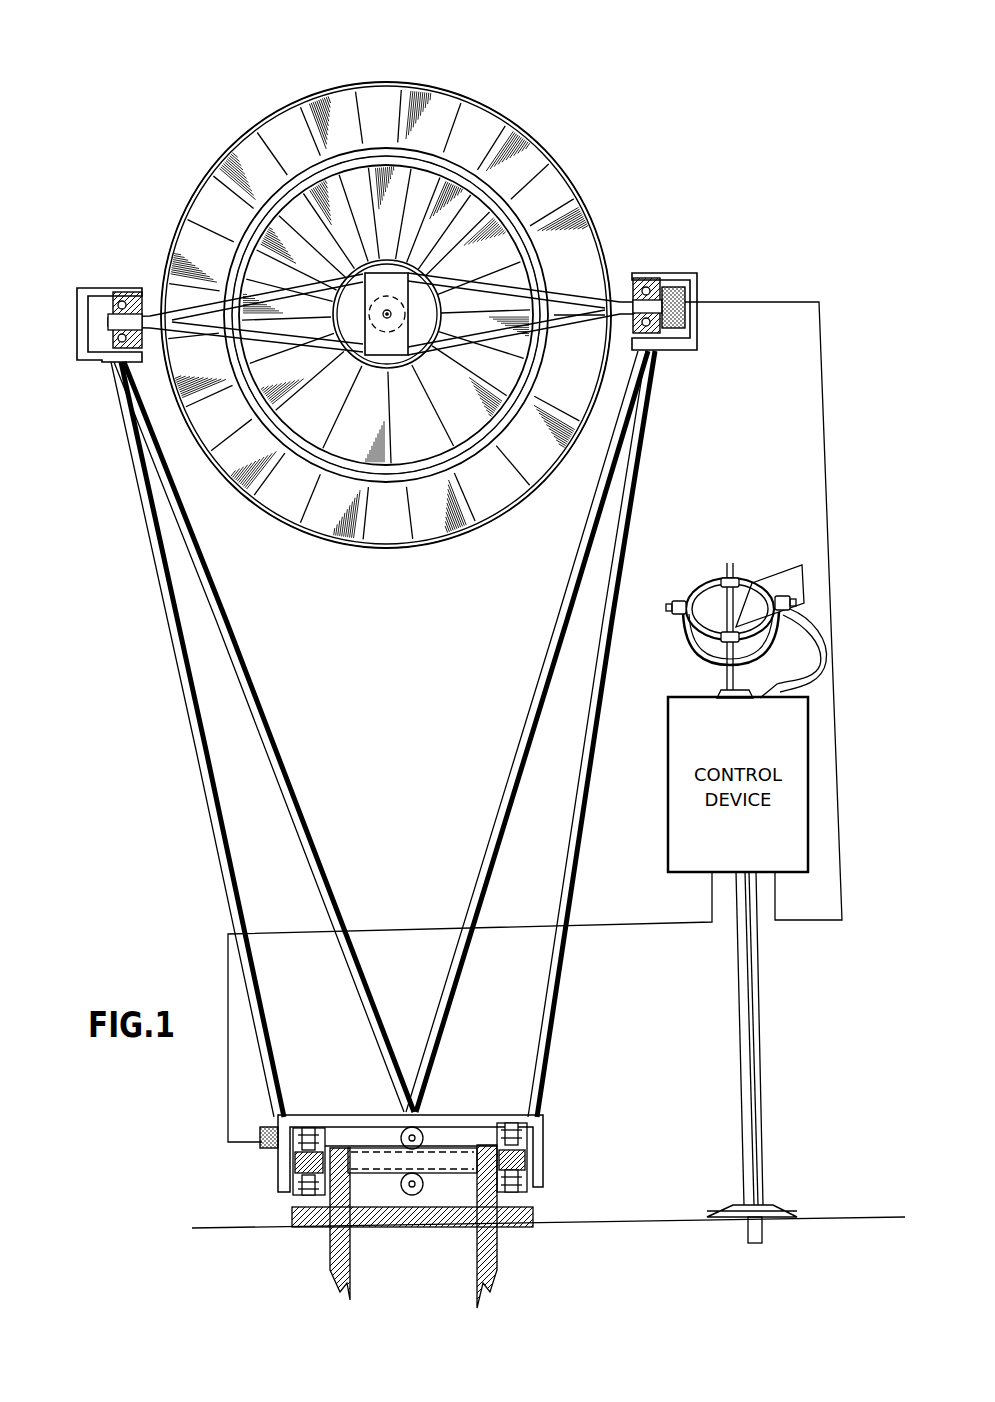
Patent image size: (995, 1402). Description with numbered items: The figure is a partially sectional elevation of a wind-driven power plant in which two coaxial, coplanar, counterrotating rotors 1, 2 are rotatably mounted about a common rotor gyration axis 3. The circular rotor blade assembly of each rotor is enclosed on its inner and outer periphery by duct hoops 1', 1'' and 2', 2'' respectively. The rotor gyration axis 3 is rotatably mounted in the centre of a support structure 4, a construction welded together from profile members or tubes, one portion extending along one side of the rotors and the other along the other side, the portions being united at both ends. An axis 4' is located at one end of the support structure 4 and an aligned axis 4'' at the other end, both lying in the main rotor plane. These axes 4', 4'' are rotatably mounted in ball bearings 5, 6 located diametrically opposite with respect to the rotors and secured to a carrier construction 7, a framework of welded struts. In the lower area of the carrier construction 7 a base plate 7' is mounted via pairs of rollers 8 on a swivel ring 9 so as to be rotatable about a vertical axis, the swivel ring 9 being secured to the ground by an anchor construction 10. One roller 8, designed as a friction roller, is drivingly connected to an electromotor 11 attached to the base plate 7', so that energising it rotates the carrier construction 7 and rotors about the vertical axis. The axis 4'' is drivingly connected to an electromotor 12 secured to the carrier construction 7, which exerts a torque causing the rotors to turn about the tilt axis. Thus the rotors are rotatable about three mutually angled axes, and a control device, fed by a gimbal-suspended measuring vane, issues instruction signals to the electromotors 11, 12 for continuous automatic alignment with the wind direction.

The rotor 1 is at (391, 315).
The duct hoop 1' is at (386, 297).
The duct hoop 1'' is at (386, 275).
The rotor 2 is at (386, 249).
The duct hoop 2' is at (386, 237).
The duct hoop 2'' is at (386, 231).
The rotor gyration axis 3 is at (390, 313).
The support structure 4 is at (370, 238).
The axis 4' is at (83, 294).
The axis 4'' is at (677, 281).
The bearing 5 is at (118, 293).
The bearing 6 is at (648, 282).
The carrier construction 7 is at (413, 734).
The base plate 7' is at (470, 1103).
The rollers 8 is at (540, 1128).
The swivel ring 9 is at (525, 1158).
The anchor construction 10 is at (416, 1224).
The electromotor 11 is at (260, 1131).
The electromotor 12 is at (684, 288).